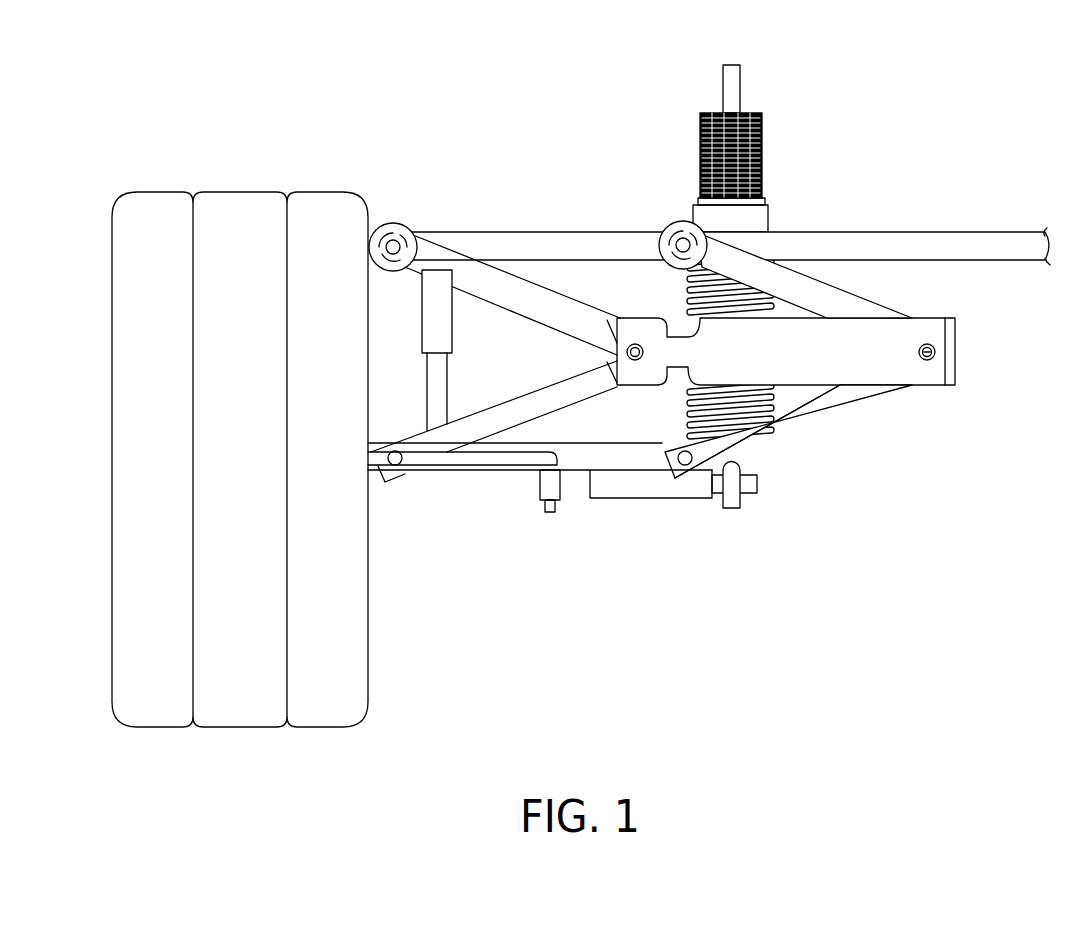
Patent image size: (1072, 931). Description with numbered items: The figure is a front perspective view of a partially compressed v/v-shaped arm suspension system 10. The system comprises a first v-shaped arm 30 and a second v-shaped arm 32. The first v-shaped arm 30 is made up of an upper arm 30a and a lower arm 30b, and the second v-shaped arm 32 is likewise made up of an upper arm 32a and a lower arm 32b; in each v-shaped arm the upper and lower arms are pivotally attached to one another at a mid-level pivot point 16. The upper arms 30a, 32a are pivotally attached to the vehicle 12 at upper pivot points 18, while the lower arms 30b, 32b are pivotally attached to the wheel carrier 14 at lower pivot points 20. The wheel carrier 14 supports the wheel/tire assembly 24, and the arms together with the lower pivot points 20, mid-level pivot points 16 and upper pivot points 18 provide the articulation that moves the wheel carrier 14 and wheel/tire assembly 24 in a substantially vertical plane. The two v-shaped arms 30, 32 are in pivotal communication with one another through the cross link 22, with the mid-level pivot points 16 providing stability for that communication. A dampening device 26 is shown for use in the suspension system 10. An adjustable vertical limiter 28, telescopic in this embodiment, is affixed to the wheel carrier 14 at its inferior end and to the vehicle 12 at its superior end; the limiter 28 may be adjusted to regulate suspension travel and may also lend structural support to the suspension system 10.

The suspension system 10 is at (878, 88).
The vehicle 12 is at (950, 242).
The wheel carrier 14 is at (568, 458).
The mid-level pivot point 16 is at (937, 352).
The upper pivot point 18 is at (398, 242).
The lower pivot point 20 is at (397, 470).
The cross link 22 is at (826, 366).
The wheel/tire assembly 24 is at (125, 617).
The dampening device 26 is at (748, 122).
The adjustable vertical limiter 28 is at (437, 320).
The first v-shaped arm 30 is at (495, 316).
The upper arm 30a is at (530, 295).
The lower arm 30b is at (490, 432).
The second v-shaped arm 32 is at (795, 422).
The upper arm 32a is at (790, 268).
The lower arm 32b is at (862, 395).